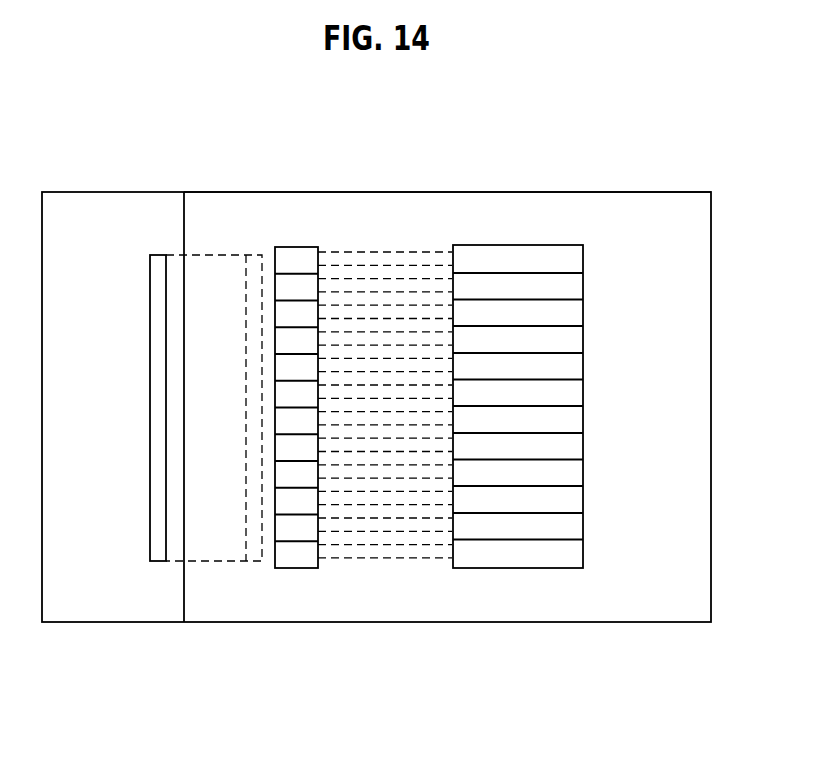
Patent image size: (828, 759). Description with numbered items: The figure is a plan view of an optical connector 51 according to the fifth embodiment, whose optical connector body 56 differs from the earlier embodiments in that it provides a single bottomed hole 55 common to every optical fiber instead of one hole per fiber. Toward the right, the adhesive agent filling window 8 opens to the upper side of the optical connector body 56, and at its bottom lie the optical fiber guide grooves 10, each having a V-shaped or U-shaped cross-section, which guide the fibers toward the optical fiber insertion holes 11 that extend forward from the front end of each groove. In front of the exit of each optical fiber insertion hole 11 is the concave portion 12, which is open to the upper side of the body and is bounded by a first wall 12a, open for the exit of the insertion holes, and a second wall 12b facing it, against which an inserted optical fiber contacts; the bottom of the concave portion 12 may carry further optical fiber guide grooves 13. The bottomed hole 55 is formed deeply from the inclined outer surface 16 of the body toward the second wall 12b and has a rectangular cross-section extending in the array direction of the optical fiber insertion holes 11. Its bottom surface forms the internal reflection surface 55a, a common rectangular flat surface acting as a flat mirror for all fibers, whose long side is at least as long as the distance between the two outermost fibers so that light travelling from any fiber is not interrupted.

The optical connector 51 is at (620, 172).
The inclined outer surface 16 is at (87, 212).
The optical connector body 56 is at (450, 212).
The bottomed hole 55 is at (150, 342).
The internal reflection surface 55a is at (252, 323).
The concave portion 12 is at (281, 275).
The first wall 12a is at (318, 305).
The second wall 12b is at (297, 522).
The optical fiber guide grooves 13 is at (312, 489).
The optical fiber insertion holes 11 is at (393, 478).
The optical fiber guide grooves 10 is at (528, 473).
The adhesive agent filling window 8 is at (587, 348).